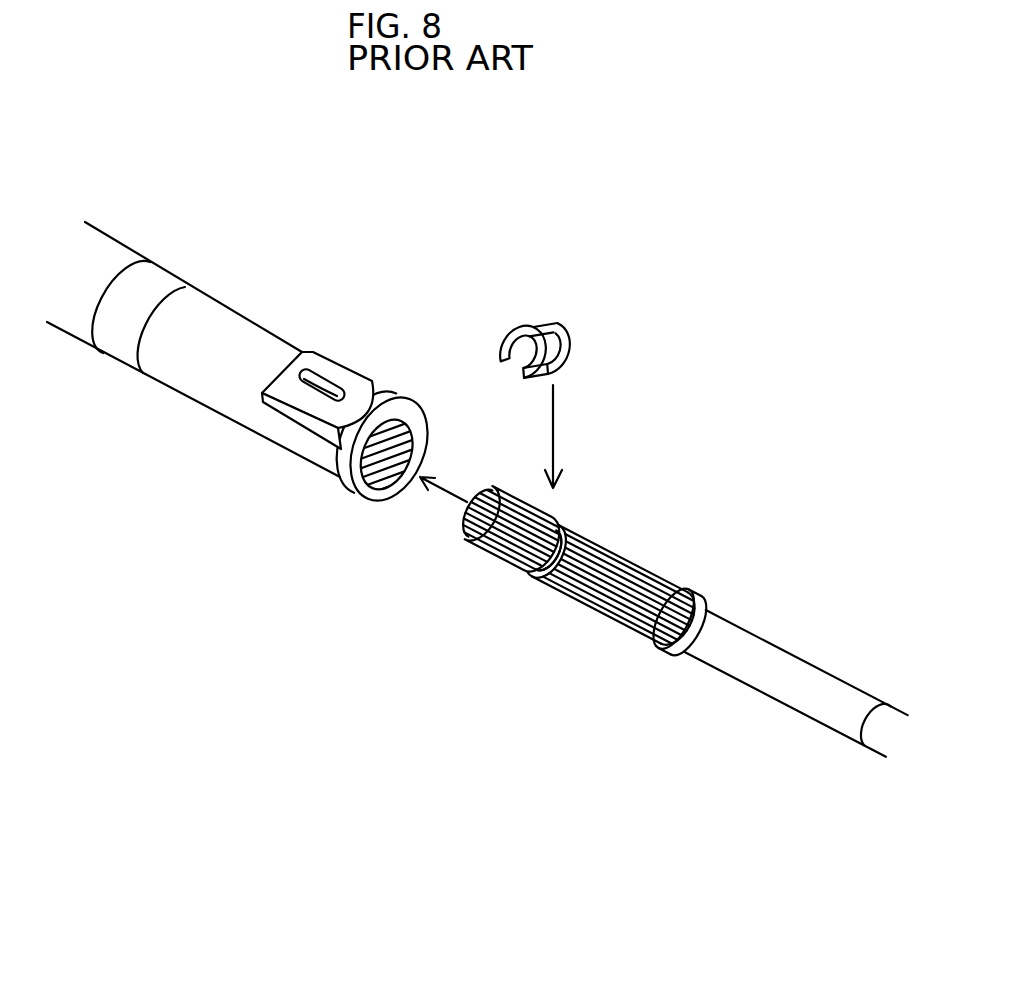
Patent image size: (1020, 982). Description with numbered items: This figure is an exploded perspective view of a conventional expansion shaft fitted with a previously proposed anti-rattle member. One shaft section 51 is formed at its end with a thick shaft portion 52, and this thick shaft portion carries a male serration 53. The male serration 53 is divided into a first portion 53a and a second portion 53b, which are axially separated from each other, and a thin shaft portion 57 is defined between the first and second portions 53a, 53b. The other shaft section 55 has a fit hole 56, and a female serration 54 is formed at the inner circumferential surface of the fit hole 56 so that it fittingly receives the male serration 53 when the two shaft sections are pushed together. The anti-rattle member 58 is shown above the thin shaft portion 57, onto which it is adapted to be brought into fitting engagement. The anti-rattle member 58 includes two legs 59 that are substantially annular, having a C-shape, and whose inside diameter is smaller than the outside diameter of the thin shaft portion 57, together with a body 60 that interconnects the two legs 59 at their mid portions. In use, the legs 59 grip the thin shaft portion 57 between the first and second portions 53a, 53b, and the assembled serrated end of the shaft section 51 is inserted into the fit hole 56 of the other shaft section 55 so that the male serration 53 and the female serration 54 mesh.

The shaft section 51 is at (816, 666).
The thick shaft portion 52 is at (700, 600).
The male serration 53 is at (566, 634).
The first portion 53a is at (497, 538).
The second portion 53b is at (595, 592).
The female serration 54 is at (384, 462).
The other shaft section 55 is at (208, 383).
The fit hole 56 is at (413, 450).
The thin shaft portion 57 is at (557, 537).
The anti-rattle member 58 is at (549, 335).
The legs 59 is at (505, 337).
The body 60 is at (533, 326).